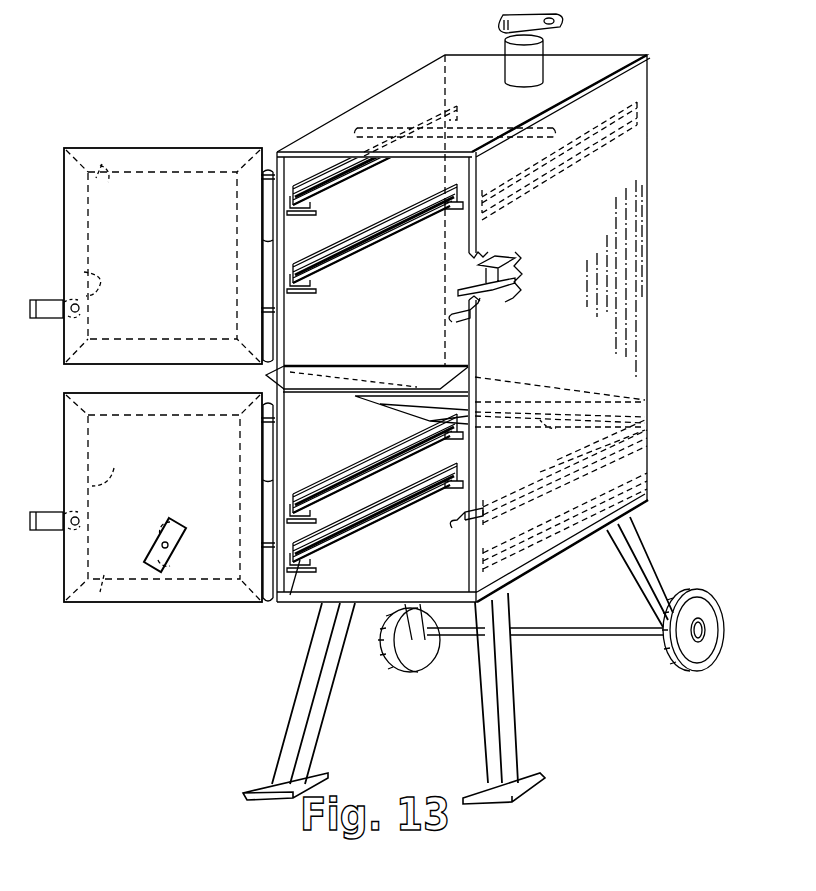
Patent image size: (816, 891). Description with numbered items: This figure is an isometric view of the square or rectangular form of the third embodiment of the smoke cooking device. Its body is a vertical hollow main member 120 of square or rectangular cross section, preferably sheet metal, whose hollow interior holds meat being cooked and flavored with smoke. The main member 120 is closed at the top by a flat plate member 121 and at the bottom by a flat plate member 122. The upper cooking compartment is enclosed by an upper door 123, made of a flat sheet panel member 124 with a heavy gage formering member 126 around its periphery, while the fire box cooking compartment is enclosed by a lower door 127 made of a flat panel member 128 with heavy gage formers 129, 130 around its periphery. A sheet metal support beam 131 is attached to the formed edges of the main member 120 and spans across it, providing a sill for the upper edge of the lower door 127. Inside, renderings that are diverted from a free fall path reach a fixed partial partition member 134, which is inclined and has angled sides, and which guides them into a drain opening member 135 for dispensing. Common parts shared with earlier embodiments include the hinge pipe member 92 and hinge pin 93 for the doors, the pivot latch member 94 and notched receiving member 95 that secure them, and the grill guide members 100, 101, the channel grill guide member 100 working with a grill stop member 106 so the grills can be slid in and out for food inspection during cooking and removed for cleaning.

The hinge pipe member 92 is at (270, 600).
The hinge pin 93 is at (268, 170).
The pivot latch member 94 is at (50, 318).
The notched receiving member 95 is at (458, 320).
The channel grill guide member 100 is at (348, 182).
The grill guide member 101 is at (562, 190).
The grill stop member 106 is at (314, 563).
The vertical hollow main member 120 is at (650, 258).
The flat plate member 121 is at (490, 94).
The flat plate member 122 is at (570, 552).
The upper door 123 is at (62, 243).
The flat sheet panel member 124 is at (187, 165).
The heavy gage formering member 126 is at (84, 272).
The lower door 127 is at (62, 484).
The flat panel member 128 is at (179, 502).
The heavy gage former 129 is at (94, 160).
The heavy gage former 130 is at (114, 468).
The sheet metal support beam 131 is at (462, 388).
The fixed partial partition member 134 is at (392, 412).
The drain opening member 135 is at (548, 432).